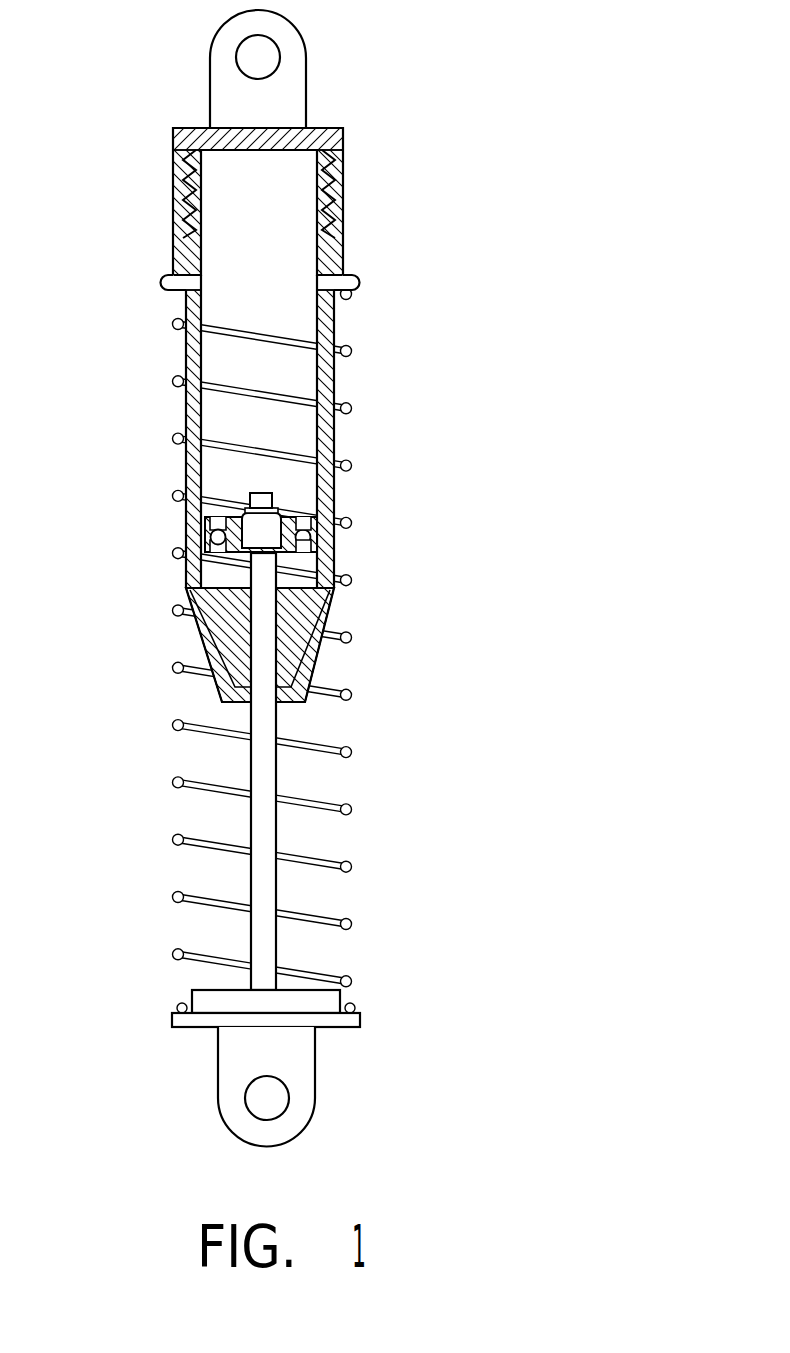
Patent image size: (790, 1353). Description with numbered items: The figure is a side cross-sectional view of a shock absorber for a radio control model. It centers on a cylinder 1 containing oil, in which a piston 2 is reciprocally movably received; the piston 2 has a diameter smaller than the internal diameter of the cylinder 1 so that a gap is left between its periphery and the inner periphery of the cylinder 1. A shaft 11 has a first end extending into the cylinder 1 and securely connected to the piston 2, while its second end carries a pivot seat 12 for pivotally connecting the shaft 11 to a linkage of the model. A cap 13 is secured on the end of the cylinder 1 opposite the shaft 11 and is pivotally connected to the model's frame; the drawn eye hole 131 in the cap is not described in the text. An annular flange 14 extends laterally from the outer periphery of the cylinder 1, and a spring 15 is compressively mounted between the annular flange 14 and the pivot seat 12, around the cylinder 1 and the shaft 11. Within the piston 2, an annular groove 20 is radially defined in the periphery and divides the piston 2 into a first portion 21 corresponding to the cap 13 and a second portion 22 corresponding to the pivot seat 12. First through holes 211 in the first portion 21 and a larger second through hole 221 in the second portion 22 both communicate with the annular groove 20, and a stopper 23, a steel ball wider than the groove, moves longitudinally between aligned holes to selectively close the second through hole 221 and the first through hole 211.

The cylinder 1 is at (337, 367).
The shaft 11 is at (265, 878).
The pivot seat 12 is at (282, 1058).
The cap 13 is at (337, 187).
The upper mounting eye hole 131 is at (268, 52).
The annular flange 14 is at (357, 278).
The spring 15 is at (350, 695).
The piston 2 is at (257, 448).
The annular groove 20 is at (318, 543).
The first portion 21 is at (322, 518).
The first through hole 211 is at (215, 515).
The second portion 22 is at (318, 547).
The second through hole 221 is at (214, 553).
The stopper 23 is at (217, 540).